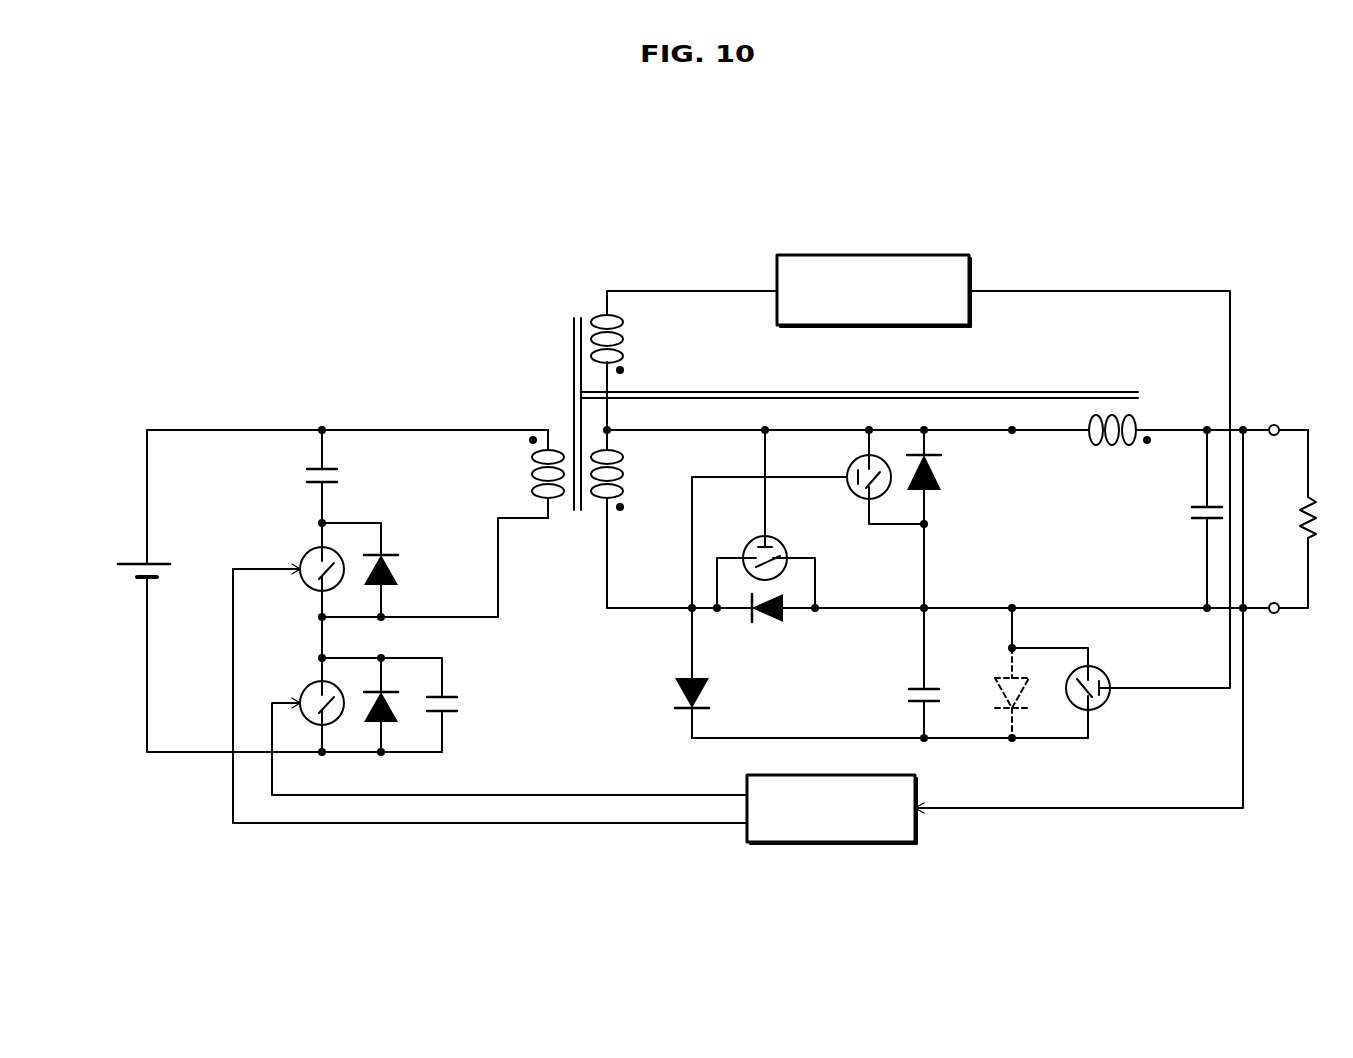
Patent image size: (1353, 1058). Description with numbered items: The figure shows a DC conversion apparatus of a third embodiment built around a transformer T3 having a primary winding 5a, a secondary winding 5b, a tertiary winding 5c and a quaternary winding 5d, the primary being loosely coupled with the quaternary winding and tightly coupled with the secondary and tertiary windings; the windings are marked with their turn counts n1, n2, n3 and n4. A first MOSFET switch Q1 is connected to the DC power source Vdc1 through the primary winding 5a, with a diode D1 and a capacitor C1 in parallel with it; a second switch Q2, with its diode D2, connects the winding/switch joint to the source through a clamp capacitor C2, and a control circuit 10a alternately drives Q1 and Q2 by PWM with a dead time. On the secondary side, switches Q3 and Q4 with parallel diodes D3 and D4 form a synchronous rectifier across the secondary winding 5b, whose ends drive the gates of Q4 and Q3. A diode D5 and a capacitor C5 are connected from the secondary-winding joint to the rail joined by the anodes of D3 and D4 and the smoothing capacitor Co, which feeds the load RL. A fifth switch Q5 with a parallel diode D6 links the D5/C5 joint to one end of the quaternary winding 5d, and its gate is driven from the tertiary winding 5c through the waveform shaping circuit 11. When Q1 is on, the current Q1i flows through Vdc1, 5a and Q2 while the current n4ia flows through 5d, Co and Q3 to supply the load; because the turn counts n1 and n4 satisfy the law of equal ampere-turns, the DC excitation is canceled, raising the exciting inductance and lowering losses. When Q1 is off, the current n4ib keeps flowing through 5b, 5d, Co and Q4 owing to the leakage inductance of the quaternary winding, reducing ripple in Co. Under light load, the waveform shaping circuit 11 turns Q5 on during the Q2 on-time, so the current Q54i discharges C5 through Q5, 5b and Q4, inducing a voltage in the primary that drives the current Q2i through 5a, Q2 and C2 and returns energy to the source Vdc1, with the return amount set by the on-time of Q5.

The waveform shaping circuit 11 is at (822, 255).
The control circuit 10a is at (830, 842).
The transformer T3 is at (852, 399).
The number of turns of primary winding n1 is at (535, 464).
The secondary winding n2 is at (622, 474).
The tertiary winding n3 is at (622, 339).
The number of turns of quaternary winding n4 is at (1101, 439).
The primary winding 5a is at (545, 500).
The secondary winding 5b is at (628, 505).
The tertiary winding 5c is at (622, 305).
The quaternary winding 5d is at (1137, 415).
The first switch Q1 is at (305, 701).
The second switch Q2 is at (305, 566).
The third switch Q3 is at (860, 488).
The fourth switch Q4 is at (751, 552).
The fifth switch Q5 is at (1096, 675).
The diode D1 is at (389, 721).
The diode D2 is at (397, 569).
The diode D3 is at (939, 472).
The diode D4 is at (767, 624).
The diode D5 is at (707, 693).
The diode D6 is at (1004, 693).
The capacitor C1 is at (458, 705).
The clamp capacitor C2 is at (338, 477).
The capacitor C5 is at (908, 698).
The smoothing capacitor Co is at (1190, 514).
The load RL is at (1323, 517).
The DC power source Vdc1 is at (119, 565).
The current Q1i is at (347, 413).
The current Q2i' Q2i is at (494, 496).
The current Q54i is at (666, 450).
The current n4ia is at (936, 605).
The current n4ib is at (910, 598).